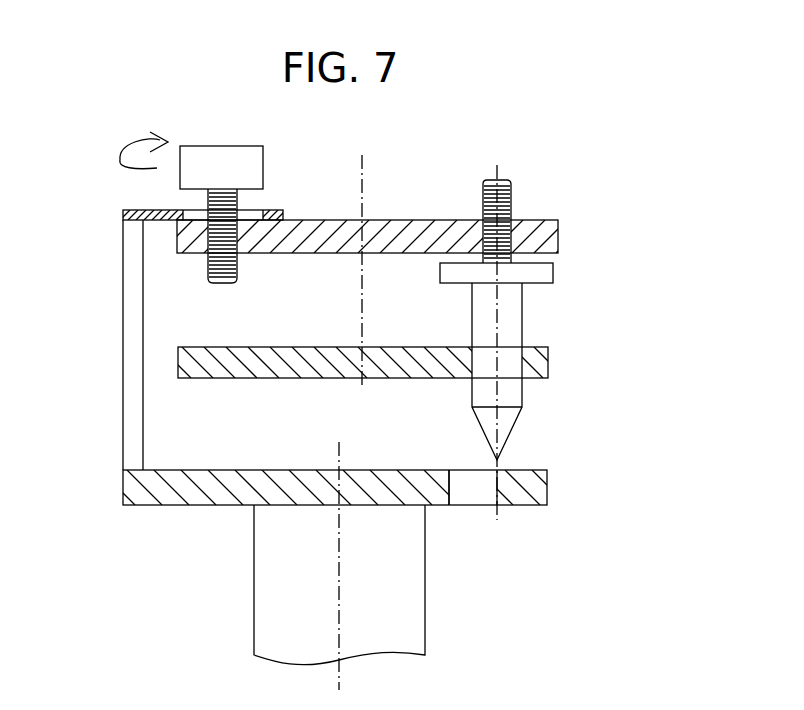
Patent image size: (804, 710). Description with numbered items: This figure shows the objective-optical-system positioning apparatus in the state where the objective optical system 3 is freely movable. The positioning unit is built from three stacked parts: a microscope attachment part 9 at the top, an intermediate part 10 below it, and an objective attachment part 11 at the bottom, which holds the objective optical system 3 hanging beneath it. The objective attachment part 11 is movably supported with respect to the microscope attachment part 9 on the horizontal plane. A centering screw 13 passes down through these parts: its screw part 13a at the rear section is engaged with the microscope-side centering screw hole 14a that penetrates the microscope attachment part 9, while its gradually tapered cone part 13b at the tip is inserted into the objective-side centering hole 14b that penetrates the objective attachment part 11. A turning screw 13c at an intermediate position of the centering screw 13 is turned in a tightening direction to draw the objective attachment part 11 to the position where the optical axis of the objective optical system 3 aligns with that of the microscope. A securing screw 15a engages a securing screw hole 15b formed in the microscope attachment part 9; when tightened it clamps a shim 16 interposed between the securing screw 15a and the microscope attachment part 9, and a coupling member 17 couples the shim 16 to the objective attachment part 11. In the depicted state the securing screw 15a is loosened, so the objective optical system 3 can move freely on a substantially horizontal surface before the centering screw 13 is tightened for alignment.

The objective optical system 3 is at (254, 590).
The microscope attachment part 9 is at (558, 240).
The intermediate part 10 is at (548, 360).
The objective attachment part 11 is at (548, 488).
The centering screw 13 is at (622, 289).
The screw part 13a is at (511, 195).
The cone part 13b is at (480, 432).
The turning screw 13c is at (540, 290).
The microscope-side centering screw hole 14a is at (487, 224).
The objective-side centering hole 14b is at (449, 490).
The securing screw 15a is at (222, 146).
The securing screw hole 15b is at (212, 242).
The shim 16 is at (140, 210).
The coupling member 17 is at (123, 364).